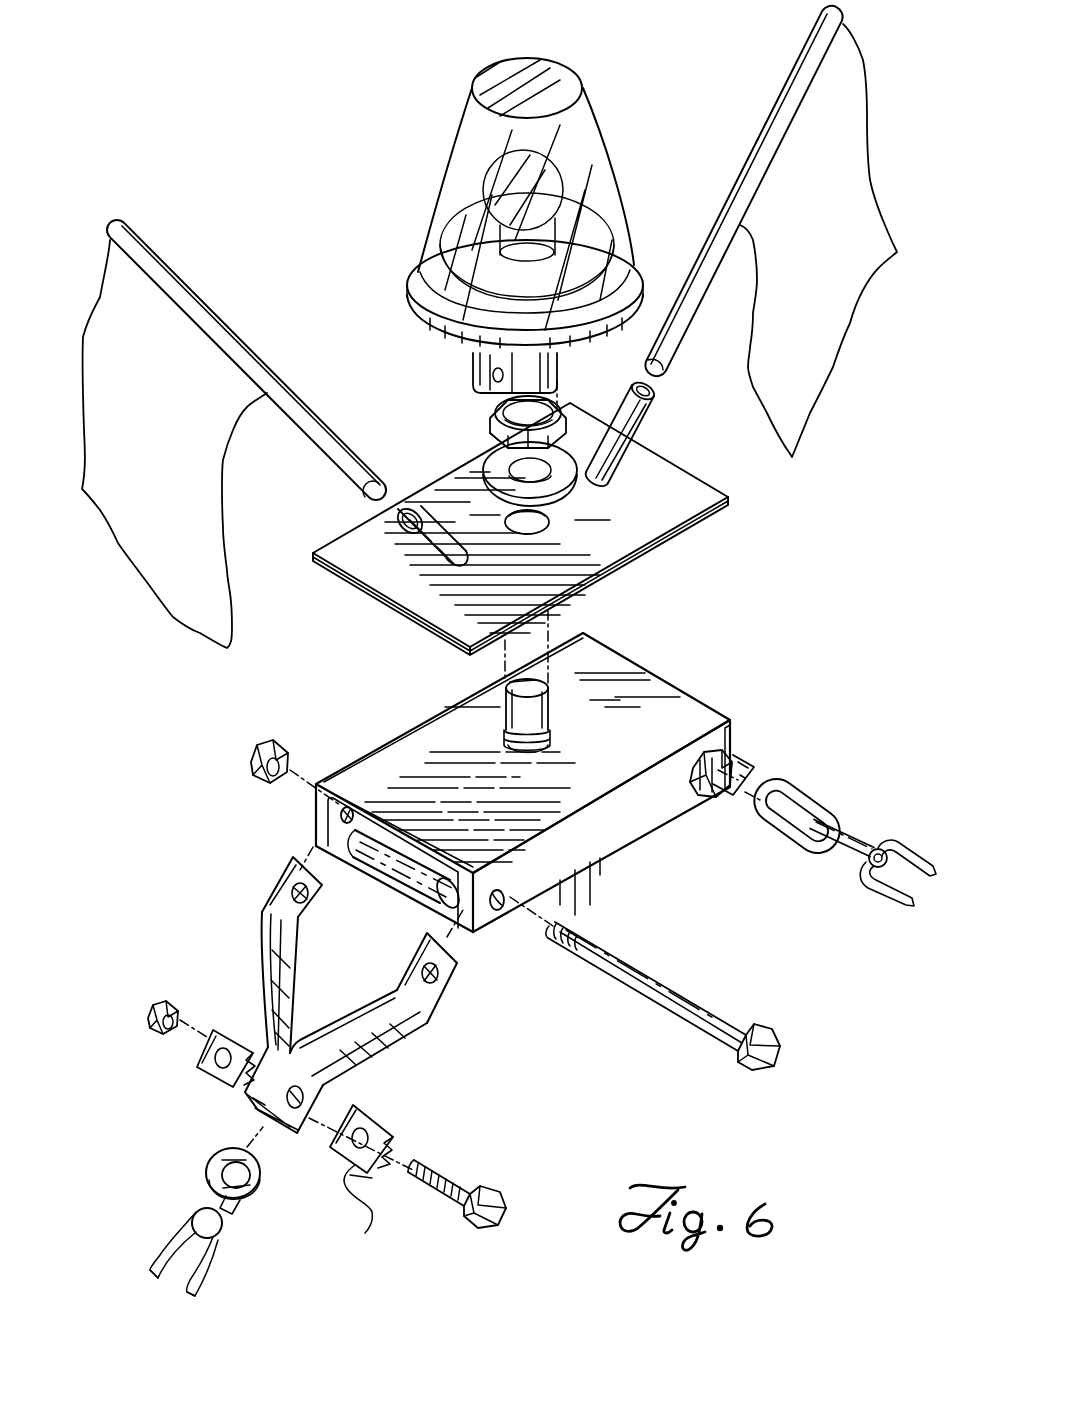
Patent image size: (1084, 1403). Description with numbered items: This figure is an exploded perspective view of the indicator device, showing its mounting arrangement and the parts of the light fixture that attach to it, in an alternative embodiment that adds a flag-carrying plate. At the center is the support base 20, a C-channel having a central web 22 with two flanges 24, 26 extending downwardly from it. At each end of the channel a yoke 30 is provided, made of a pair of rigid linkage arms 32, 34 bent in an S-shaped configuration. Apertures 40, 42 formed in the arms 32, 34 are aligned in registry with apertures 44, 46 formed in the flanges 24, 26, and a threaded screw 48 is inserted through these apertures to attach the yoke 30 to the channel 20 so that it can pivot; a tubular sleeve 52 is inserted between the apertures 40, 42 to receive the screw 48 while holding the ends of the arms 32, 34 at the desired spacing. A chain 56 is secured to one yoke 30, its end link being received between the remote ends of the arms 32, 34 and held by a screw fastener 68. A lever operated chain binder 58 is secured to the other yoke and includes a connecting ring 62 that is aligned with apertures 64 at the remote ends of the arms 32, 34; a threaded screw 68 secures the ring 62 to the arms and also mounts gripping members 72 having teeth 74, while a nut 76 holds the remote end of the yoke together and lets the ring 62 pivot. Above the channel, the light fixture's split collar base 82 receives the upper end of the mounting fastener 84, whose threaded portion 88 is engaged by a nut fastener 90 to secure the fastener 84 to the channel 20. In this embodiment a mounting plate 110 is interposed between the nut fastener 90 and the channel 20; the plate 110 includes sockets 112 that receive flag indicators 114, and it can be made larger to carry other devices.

The support base 20 is at (501, 837).
The central web 22 is at (608, 655).
The flange 24 is at (601, 826).
The flange 26 is at (347, 819).
The yoke 30 is at (493, 947).
The linkage arm 32 is at (292, 960).
The linkage arm 34 is at (735, 815).
The aperture 40 is at (308, 895).
The aperture 42 is at (438, 975).
The aperture 44 is at (498, 883).
The aperture 46 is at (351, 806).
The screw 48 is at (692, 774).
The spacer tube 52 is at (420, 880).
The chain 56 is at (798, 810).
The chain binder 58 is at (146, 1258).
The connecting ring 62 is at (218, 1159).
The apertures 64 is at (282, 1127).
The screw 68 is at (453, 1182).
The gripping members 72 is at (236, 1055).
The teeth 74 is at (357, 1207).
The nut 76 is at (168, 1025).
The split collar base 82 is at (556, 368).
The mounting fastener 84 is at (549, 705).
The threaded portion 88 is at (551, 735).
The nut fastener 90 is at (486, 410).
The mounting plate 110 is at (690, 478).
The sockets 112 is at (470, 545).
The flag indicators 114 is at (210, 473).